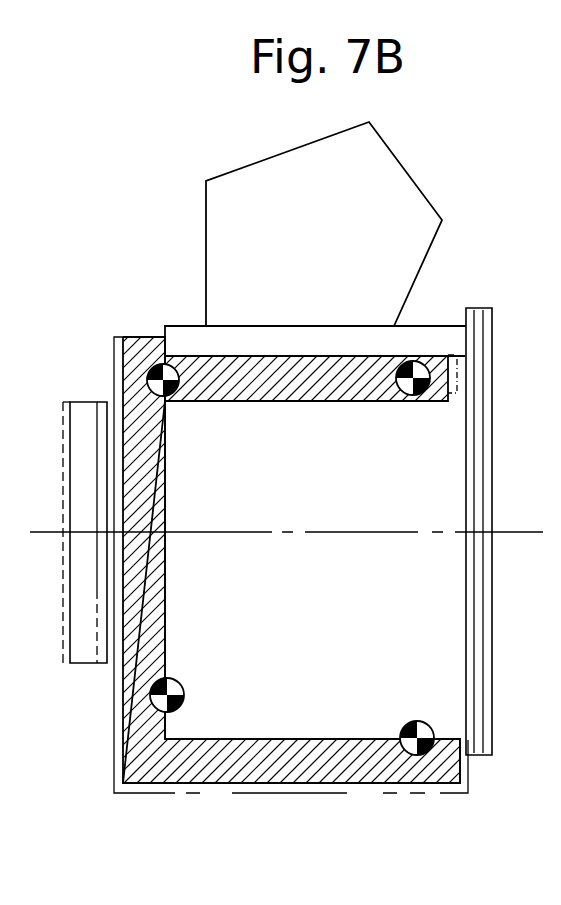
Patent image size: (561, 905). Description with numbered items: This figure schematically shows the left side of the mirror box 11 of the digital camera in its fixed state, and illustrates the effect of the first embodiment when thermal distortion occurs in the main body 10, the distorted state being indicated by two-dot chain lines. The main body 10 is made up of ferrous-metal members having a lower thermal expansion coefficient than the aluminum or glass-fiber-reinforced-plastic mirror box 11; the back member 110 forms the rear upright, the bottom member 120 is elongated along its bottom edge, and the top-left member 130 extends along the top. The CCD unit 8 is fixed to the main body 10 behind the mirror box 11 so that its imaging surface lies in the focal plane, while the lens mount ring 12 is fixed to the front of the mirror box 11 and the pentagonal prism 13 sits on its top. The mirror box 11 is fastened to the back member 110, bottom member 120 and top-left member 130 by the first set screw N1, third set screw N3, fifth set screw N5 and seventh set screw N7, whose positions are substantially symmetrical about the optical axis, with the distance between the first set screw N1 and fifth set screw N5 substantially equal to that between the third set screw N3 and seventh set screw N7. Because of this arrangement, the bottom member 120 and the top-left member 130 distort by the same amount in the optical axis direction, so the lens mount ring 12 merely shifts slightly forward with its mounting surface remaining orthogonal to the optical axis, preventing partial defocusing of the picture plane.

The CCD unit 8 is at (90, 655).
The main body 10 is at (107, 742).
The mirror box 11 is at (280, 450).
The lens mount ring 12 is at (470, 520).
The pentagonal prism 13 is at (404, 211).
The back member 110 is at (140, 440).
The bottom member 120 is at (288, 763).
The top-left member 130 is at (257, 376).
The first set screw N1 is at (158, 364).
The third set screw N3 is at (177, 712).
The fifth set screw N5 is at (428, 358).
The seventh set screw N7 is at (423, 757).